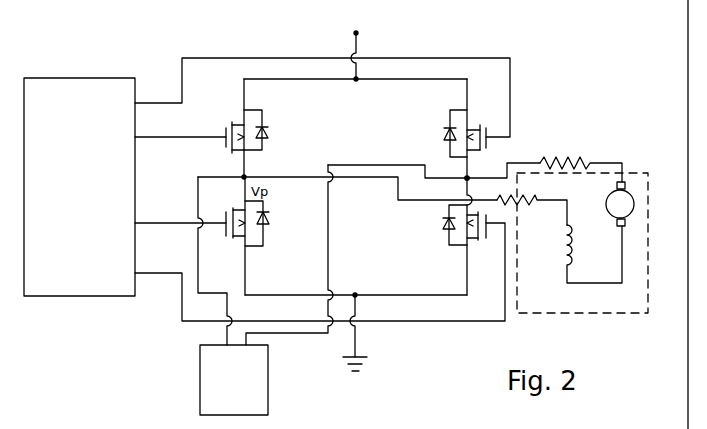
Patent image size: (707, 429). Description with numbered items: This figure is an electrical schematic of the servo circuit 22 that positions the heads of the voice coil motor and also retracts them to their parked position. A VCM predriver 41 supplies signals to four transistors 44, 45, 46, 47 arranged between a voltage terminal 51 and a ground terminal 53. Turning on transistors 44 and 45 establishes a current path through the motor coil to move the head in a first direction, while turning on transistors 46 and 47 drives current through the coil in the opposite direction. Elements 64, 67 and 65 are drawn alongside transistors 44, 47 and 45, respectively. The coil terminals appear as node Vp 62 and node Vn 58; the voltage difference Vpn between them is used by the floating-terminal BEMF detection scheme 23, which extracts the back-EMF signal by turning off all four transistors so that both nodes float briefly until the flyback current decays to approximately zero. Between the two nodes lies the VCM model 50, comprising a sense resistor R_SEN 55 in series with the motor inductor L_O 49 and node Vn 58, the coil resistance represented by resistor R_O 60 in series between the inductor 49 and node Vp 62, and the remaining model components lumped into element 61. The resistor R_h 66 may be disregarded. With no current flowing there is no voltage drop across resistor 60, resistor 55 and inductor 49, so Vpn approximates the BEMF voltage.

The servo circuit 22 is at (557, 65).
The VCM predriver 41 is at (94, 78).
The voltage terminal 51 is at (362, 40).
The transistor 44 is at (232, 149).
The body diode of transistor 44 64 is at (272, 141).
The node Vp 62 is at (276, 163).
The transistor 46 is at (232, 240).
The resistor R_h 66 is at (270, 218).
The ground terminal 53 is at (357, 340).
The floating-terminal BEMF detection scheme 23 is at (268, 378).
The transistor 47 is at (480, 124).
The body diode of transistor 47 67 is at (445, 137).
The node Vn 58 is at (469, 178).
The transistor 45 is at (472, 243).
The body diode of transistor 45 65 is at (440, 226).
The sense resistor R_SEN 55 is at (559, 160).
The resistor R_O 60 is at (530, 196).
The motor inductor L_O 49 is at (565, 262).
The lumped element 61 is at (606, 207).
The VCM model 50 is at (626, 318).